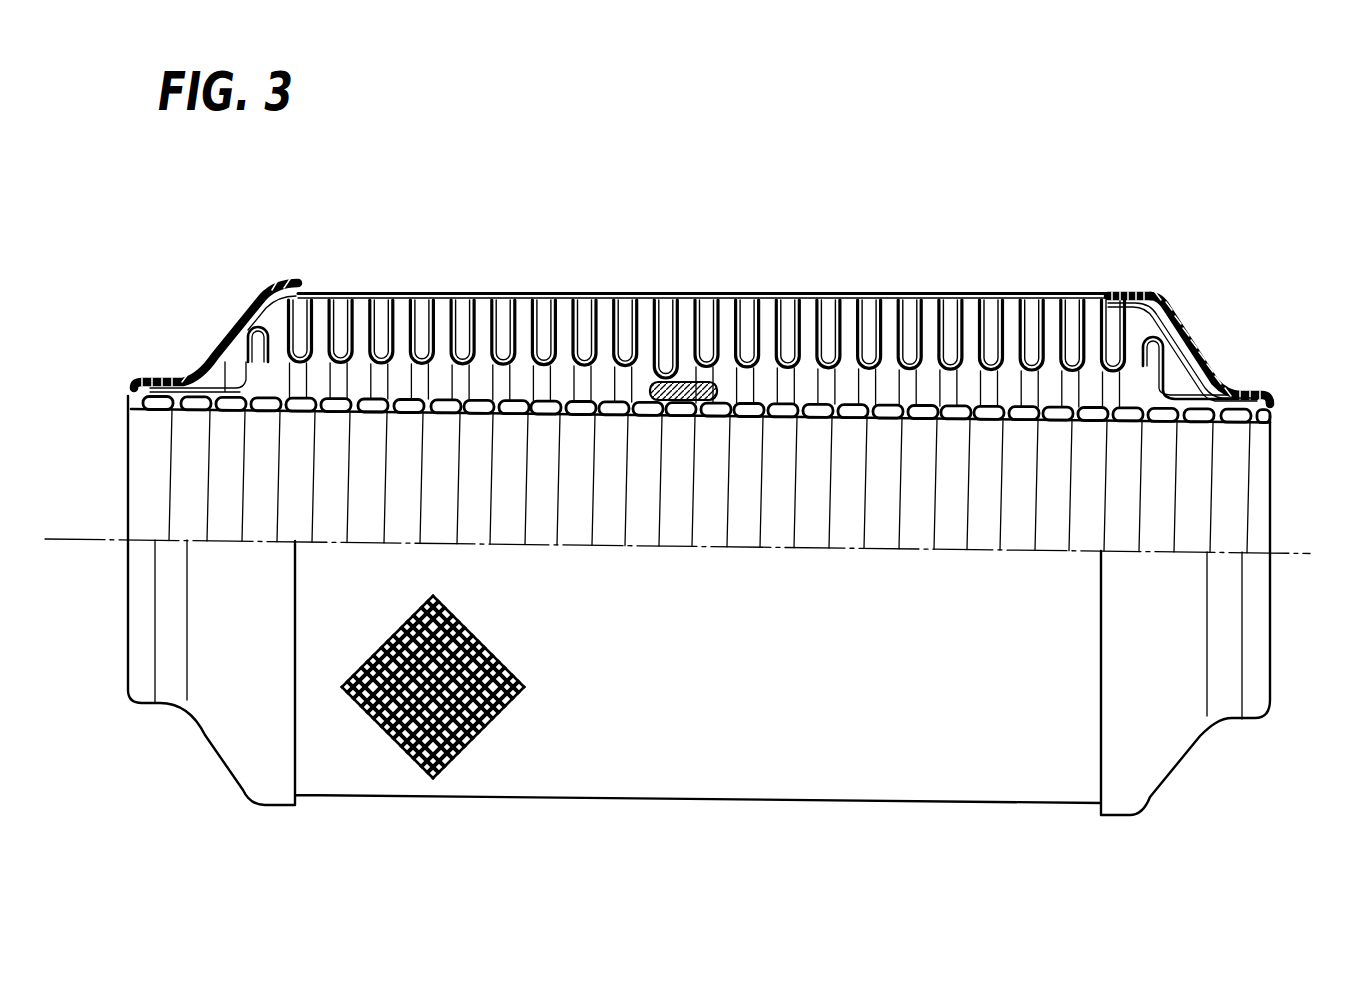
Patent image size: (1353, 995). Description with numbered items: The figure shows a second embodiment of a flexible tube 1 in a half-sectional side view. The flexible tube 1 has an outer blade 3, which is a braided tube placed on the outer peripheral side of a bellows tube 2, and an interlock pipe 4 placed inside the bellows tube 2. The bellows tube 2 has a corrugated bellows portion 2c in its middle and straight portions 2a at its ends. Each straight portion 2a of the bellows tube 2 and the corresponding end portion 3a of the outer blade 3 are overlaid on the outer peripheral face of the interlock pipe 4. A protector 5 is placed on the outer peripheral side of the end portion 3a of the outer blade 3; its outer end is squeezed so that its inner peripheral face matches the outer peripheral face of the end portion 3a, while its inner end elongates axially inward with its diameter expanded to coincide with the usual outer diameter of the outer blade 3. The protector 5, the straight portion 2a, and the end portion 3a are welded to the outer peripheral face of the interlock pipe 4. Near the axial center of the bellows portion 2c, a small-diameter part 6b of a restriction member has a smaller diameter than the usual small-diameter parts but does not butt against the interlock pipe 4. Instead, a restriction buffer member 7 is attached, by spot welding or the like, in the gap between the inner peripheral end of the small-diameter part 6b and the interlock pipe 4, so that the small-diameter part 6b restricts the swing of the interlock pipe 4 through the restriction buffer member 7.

The flexible tube 1 is at (903, 266).
The bellows tube 2 is at (647, 304).
The straight portion 2a is at (224, 342).
The bellows portion 2c is at (410, 316).
The outer blade 3 is at (804, 293).
The end portion 3a is at (203, 360).
The interlock pipe 4 is at (916, 532).
The protector 5 is at (1142, 294).
The small-diameter part 6b is at (706, 300).
The restriction buffer member 7 is at (680, 401).